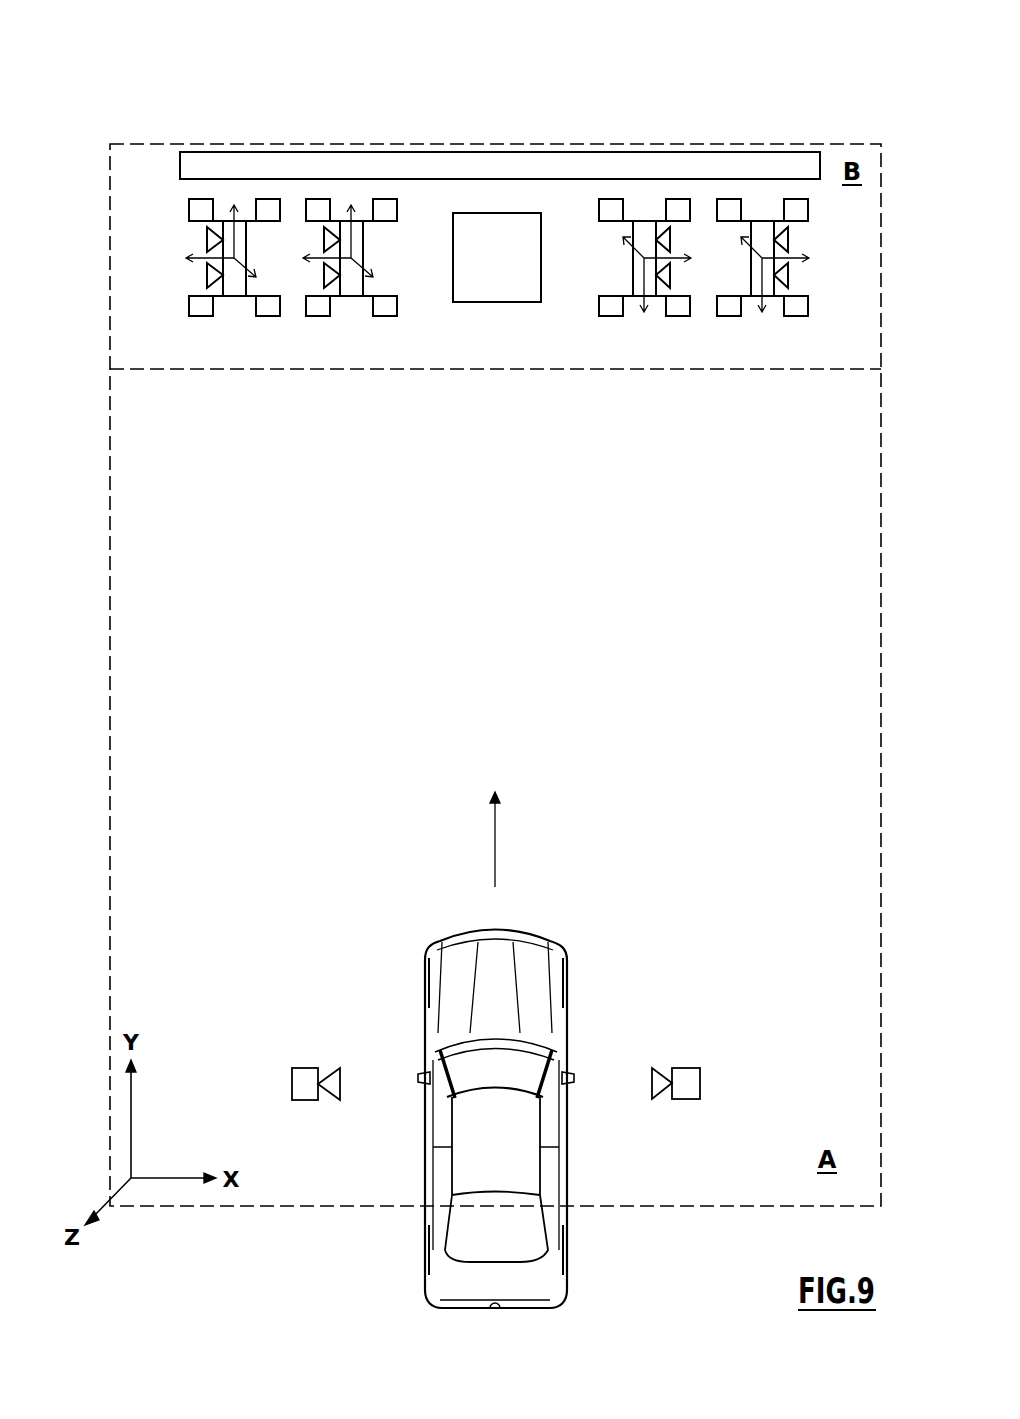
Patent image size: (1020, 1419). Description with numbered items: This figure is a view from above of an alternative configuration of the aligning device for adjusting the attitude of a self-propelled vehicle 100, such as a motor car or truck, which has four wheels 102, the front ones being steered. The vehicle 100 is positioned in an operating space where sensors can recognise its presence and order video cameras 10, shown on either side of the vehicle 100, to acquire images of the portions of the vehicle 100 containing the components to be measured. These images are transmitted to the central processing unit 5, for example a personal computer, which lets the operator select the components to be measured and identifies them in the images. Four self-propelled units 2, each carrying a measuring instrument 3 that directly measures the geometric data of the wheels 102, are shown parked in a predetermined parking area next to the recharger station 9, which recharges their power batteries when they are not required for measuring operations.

The self-propelled unit 2 is at (239, 292).
The measuring instrument 3 is at (210, 238).
The central processing unit 5 is at (492, 242).
The recharger station 9 is at (328, 167).
The video camera 10 is at (300, 1084).
The self-propelled vehicle 100 is at (537, 1295).
The wheel 102 is at (423, 983).